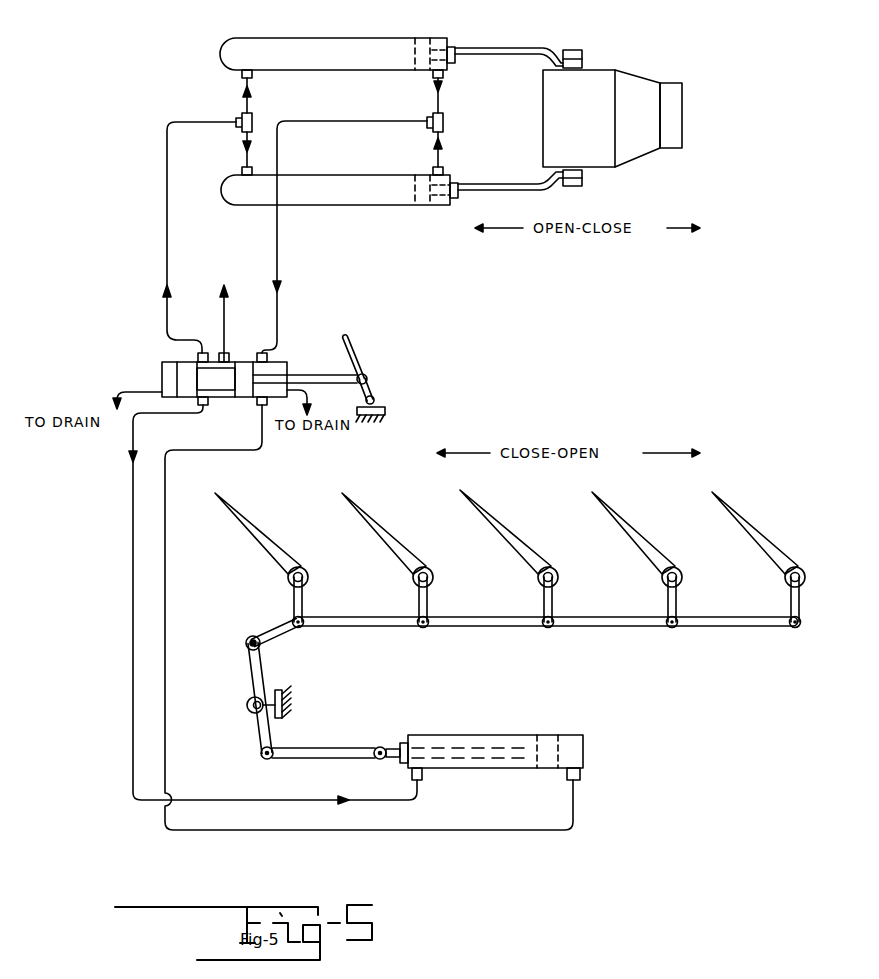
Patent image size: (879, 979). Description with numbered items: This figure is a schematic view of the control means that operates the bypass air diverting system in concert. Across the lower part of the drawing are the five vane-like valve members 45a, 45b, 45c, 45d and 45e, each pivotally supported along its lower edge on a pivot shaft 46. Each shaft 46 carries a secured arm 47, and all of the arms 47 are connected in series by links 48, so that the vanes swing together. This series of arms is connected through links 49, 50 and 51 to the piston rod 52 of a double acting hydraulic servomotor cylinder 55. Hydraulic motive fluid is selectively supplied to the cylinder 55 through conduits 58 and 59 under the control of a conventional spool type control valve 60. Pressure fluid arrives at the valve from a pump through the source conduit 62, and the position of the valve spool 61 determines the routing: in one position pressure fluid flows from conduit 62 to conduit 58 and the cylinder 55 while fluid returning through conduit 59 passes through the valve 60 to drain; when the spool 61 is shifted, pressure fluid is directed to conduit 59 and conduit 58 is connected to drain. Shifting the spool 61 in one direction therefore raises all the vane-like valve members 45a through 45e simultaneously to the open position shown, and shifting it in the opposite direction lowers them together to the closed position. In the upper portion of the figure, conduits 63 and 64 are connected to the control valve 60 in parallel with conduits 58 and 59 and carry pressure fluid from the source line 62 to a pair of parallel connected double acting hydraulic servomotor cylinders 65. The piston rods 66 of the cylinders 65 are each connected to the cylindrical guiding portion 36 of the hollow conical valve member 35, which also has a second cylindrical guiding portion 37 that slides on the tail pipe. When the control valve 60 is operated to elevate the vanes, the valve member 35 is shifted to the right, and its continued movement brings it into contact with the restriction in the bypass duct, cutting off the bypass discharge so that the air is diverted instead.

The hollow conical valve member 35 is at (630, 82).
The cylindrical guiding portion 36 is at (548, 115).
The cylindrical guiding portion 37 is at (669, 148).
The vane-like valve member 45a is at (262, 526).
The vane-like valve member 45b is at (384, 526).
The vane-like valve member 45c is at (507, 523).
The vane-like valve member 45d is at (628, 519).
The vane-like valve member 45e is at (755, 525).
The pivot shaft 46 is at (309, 578).
The arm 47 is at (294, 602).
The link 48 is at (356, 628).
The link 49 is at (279, 636).
The link 50 is at (245, 671).
The link 51 is at (335, 748).
The piston rod 52 is at (393, 747).
The double acting hydraulic servomotor cylinder 55 is at (497, 735).
The conduit 58 is at (133, 612).
The conduit 59 is at (165, 705).
The spool type control valve 60 is at (277, 358).
The valve spool 61 is at (214, 395).
The conduit 62 is at (224, 338).
The conduit 63 is at (167, 248).
The conduit 64 is at (277, 247).
The double acting hydraulic servomotor cylinder 65 is at (350, 72).
The piston rod 66 is at (507, 58).